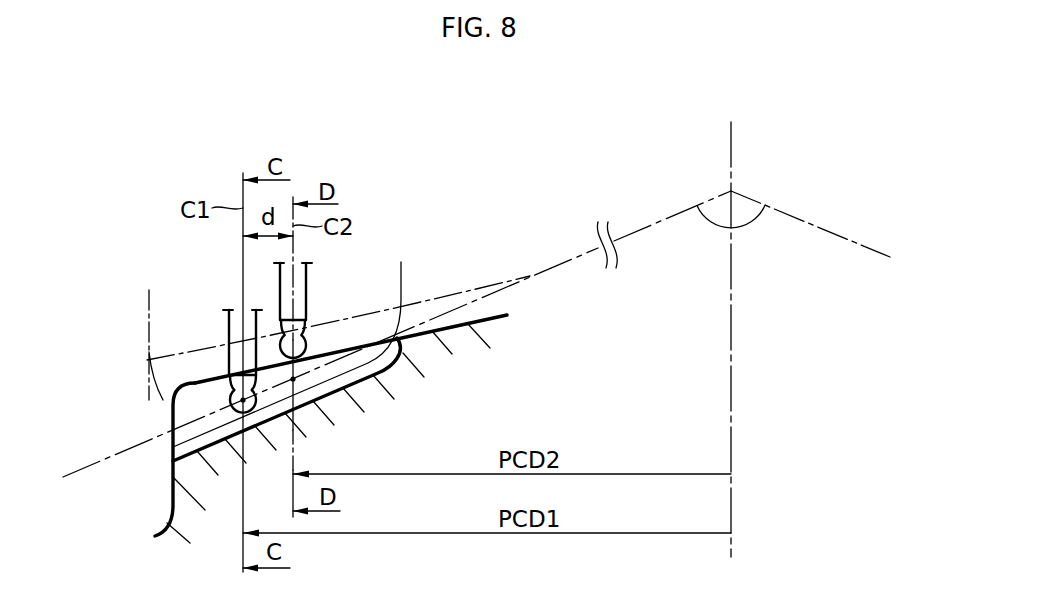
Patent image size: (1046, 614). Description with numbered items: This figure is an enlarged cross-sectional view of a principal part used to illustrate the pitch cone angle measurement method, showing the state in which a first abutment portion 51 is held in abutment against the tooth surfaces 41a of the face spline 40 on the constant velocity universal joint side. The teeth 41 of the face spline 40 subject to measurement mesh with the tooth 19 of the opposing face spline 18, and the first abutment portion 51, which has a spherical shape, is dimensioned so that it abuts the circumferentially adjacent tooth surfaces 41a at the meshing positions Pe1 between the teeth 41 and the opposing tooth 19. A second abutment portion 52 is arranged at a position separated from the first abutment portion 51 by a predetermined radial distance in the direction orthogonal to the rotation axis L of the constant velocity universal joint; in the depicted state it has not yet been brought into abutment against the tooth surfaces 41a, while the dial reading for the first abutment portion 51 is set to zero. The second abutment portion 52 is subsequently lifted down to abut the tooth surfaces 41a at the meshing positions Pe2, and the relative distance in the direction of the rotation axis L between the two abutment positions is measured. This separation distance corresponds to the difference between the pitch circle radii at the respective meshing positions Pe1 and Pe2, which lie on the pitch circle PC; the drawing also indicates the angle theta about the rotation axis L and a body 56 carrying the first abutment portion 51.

The opposing face spline 18 is at (128, 364).
The tooth of the opposing face spline 19 is at (172, 451).
The face spline 40 is at (362, 328).
The teeth of the face spline 41 is at (178, 410).
The tooth surfaces 41a is at (195, 400).
The first abutment portion 51 is at (195, 397).
The second abutment portion 52 is at (307, 338).
The plunger body 56 is at (231, 328).
The rotation axis L is at (733, 142).
The pitch circle PC is at (643, 221).
The meshing positions Pe1 is at (229, 389).
The meshing positions Pe2 is at (297, 382).
The angle theta is at (752, 224).